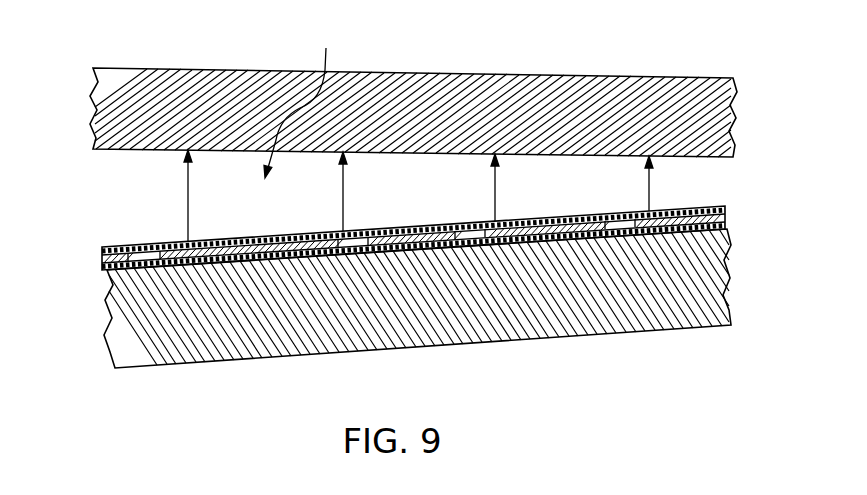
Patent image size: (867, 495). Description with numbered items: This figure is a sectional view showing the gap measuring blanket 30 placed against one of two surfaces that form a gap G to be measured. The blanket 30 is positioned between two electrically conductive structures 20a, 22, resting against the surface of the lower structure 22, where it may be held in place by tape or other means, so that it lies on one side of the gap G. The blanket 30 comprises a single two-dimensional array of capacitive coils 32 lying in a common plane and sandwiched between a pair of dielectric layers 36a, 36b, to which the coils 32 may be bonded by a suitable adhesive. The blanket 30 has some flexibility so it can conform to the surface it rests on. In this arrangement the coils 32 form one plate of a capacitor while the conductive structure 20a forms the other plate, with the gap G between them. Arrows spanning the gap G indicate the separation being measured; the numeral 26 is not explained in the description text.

The electrically conductive structure 20a is at (464, 117).
The electrically conductive structure 22 is at (258, 340).
The process direction arrow 26 is at (301, 101).
The gap measuring blanket 30 is at (415, 252).
The capacitive coils 32 is at (160, 255).
The dielectric layer 36a is at (110, 250).
The dielectric layer 36b is at (123, 272).
The gap G is at (418, 195).